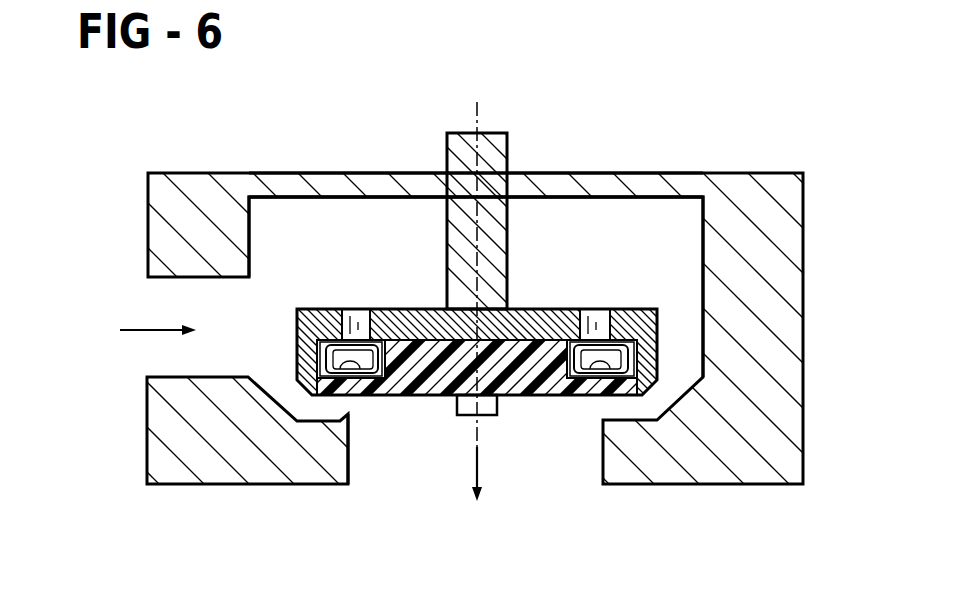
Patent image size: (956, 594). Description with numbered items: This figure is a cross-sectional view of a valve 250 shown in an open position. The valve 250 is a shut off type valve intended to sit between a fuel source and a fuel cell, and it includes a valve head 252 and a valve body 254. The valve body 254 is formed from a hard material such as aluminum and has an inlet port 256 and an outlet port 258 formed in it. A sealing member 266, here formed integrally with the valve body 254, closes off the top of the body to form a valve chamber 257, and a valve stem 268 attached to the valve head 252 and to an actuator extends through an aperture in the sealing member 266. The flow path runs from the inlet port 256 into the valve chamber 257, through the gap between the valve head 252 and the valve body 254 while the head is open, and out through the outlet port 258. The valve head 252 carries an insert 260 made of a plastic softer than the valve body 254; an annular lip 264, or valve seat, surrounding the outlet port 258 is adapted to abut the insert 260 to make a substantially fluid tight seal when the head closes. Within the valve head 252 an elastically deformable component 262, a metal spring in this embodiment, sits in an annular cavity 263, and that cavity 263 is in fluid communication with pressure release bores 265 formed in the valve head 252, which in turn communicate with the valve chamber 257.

The valve 250 is at (680, 125).
The valve head 252 is at (521, 297).
The valve body 254 is at (632, 492).
The inlet port 256 is at (196, 279).
The valve chamber 257 is at (298, 234).
The outlet port 258 is at (348, 470).
The insert 260 is at (522, 366).
The elastically deformable component 262 is at (370, 375).
The annular cavity 263 is at (338, 343).
The annular lip 264 is at (348, 428).
The pressure release bores 265 is at (362, 333).
The sealing member 266 is at (320, 195).
The valve stem 268 is at (507, 213).